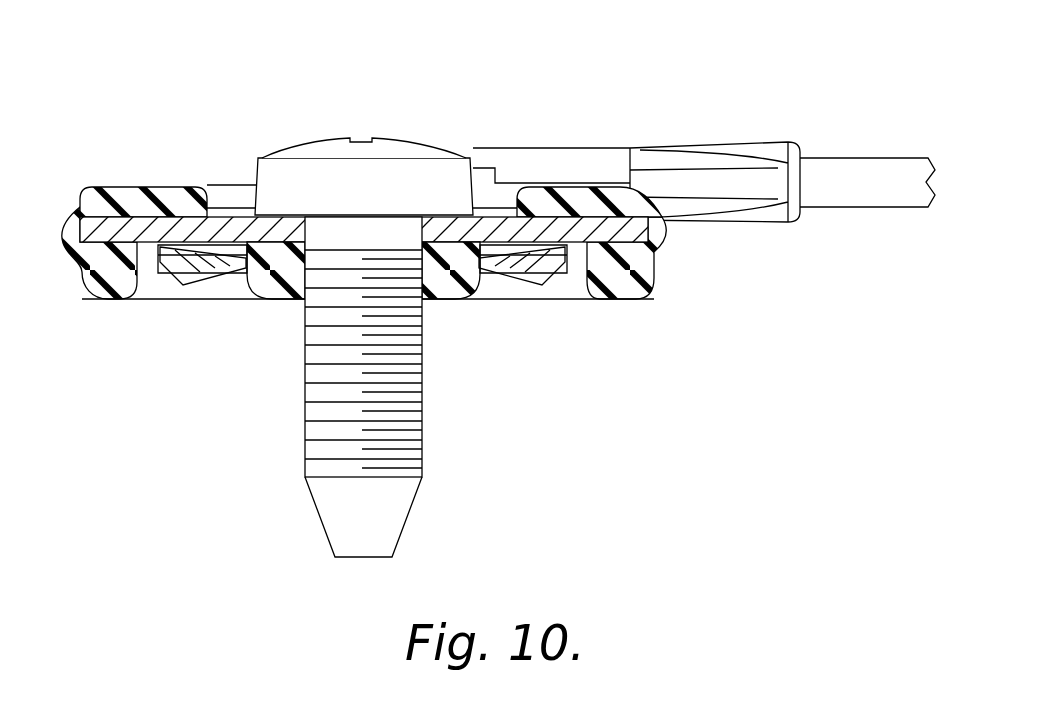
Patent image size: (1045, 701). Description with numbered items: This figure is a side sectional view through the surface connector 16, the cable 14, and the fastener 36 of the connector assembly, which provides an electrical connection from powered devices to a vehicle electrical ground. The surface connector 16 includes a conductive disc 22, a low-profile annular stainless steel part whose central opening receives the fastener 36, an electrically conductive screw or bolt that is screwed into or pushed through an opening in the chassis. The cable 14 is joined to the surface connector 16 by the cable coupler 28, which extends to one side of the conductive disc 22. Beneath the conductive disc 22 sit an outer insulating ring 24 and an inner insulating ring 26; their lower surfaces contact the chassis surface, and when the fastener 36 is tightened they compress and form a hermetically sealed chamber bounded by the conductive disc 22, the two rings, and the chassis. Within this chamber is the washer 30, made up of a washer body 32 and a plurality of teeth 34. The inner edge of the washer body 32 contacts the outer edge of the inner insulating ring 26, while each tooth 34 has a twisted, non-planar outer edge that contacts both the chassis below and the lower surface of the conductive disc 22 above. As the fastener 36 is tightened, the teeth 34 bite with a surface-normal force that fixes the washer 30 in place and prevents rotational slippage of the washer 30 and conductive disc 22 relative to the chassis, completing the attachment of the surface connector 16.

The cable 14 is at (877, 145).
The surface connector 16 is at (476, 278).
The conductive disc 22 is at (228, 220).
The outer insulating ring 24 is at (112, 190).
The inner insulating ring 26 is at (268, 292).
The cable coupler 28 is at (748, 148).
The washer 30 is at (140, 295).
The washer body 32 is at (222, 280).
The teeth 34 is at (168, 280).
The fastener 36 is at (318, 148).